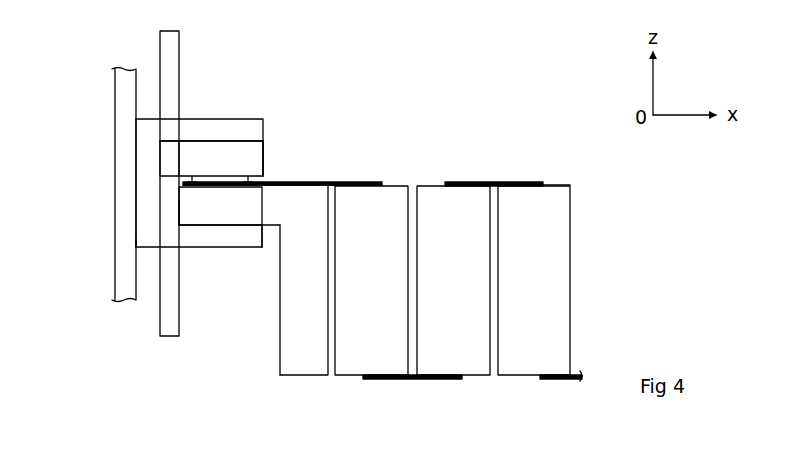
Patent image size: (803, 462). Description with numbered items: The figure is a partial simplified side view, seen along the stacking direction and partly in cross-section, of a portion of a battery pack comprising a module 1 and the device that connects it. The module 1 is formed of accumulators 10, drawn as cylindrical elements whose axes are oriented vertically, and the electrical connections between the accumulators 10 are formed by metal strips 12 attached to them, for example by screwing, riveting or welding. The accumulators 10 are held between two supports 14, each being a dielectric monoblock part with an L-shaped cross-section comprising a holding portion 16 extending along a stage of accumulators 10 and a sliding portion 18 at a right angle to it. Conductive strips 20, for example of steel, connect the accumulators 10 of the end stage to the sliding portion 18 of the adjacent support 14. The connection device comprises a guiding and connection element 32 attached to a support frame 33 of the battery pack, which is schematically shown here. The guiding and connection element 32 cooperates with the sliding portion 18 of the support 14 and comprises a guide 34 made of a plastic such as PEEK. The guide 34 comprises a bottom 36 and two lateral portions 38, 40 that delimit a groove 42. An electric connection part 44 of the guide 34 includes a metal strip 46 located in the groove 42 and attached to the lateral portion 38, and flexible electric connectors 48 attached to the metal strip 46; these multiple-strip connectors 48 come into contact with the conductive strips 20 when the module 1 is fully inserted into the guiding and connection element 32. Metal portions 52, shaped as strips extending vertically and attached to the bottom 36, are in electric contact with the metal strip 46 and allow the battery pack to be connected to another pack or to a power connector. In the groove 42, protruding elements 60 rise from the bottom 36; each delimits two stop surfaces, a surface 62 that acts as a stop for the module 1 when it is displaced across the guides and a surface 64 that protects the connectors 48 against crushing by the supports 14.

The module 1 is at (562, 180).
The accumulators 10 is at (391, 201).
The metal strips 12 is at (512, 181).
The supports 14 is at (278, 363).
The holding portion 16 is at (297, 367).
The sliding portion 18 is at (207, 216).
The conductive strips 20 is at (361, 181).
The guiding and connection element 32 is at (146, 254).
The support frame 33 is at (125, 89).
The guide 34 is at (193, 114).
The bottom 36 is at (147, 153).
The lateral portion 38 is at (227, 128).
The lateral portion 40 is at (233, 238).
The groove 42 is at (261, 230).
The electric connection part 44 is at (269, 152).
The metal strip 46 is at (232, 156).
The flexible electric connectors 48 is at (225, 177).
The metal portions 52 is at (170, 58).
The protruding elements 60 is at (157, 220).
The surface 62 is at (178, 200).
The surface 64 is at (187, 183).